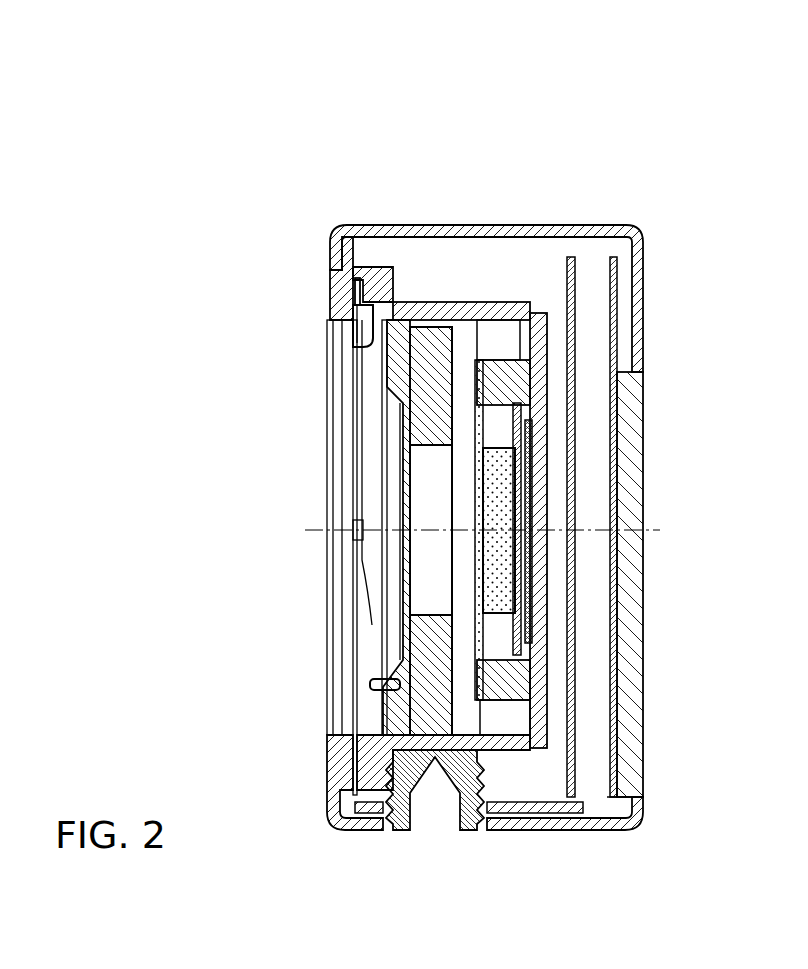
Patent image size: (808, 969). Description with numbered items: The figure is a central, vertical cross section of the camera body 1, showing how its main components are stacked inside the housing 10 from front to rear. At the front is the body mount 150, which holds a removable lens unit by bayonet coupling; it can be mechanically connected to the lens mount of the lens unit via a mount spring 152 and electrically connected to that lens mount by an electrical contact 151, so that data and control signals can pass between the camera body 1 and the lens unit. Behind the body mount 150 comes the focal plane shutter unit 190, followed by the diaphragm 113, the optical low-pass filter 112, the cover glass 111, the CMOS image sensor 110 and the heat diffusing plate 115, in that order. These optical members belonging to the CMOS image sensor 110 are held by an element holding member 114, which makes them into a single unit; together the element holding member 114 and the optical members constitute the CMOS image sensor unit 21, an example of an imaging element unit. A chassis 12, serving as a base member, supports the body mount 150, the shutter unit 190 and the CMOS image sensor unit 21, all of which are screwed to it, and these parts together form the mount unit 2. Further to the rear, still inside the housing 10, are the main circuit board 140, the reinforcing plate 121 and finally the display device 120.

The camera body 1 is at (158, 118).
The mount unit 2 is at (338, 118).
The housing 10 is at (337, 257).
The chassis 12 is at (378, 280).
The CMOS image sensor unit 21 is at (782, 165).
The CMOS image sensor 110 is at (534, 433).
The cover glass 111 is at (492, 462).
The optical low-pass filter 112 is at (533, 450).
The diaphragm 113 is at (478, 420).
The element holding member 114 is at (517, 685).
The heat diffusing plate 115 is at (541, 458).
The display device 120 is at (630, 606).
The reinforcing plate 121 is at (612, 559).
The main circuit board 140 is at (568, 735).
The body mount 150 is at (345, 283).
The electrical contact 151 is at (370, 684).
The mount spring 152 is at (362, 330).
The focal plane shutter unit 190 is at (425, 357).